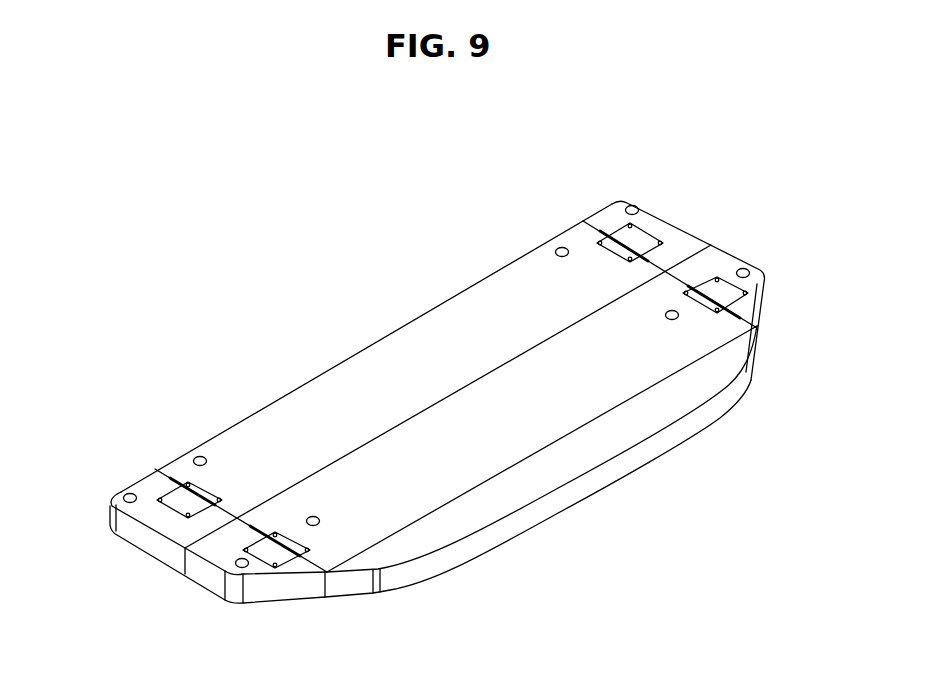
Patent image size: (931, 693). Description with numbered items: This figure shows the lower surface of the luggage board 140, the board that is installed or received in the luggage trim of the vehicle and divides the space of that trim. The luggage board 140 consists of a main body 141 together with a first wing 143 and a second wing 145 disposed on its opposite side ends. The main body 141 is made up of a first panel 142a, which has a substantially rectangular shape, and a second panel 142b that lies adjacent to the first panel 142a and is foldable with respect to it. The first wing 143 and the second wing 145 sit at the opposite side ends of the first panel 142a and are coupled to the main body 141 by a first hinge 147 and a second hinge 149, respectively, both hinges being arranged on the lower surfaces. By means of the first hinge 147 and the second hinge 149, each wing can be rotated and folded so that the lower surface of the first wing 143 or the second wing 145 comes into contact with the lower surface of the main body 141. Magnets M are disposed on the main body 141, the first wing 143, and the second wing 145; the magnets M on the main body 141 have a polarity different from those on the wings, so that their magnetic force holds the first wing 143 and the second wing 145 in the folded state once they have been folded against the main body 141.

The luggage board 140 is at (386, 232).
The main body 141 is at (245, 285).
The first panel 142a is at (272, 435).
The second panel 142b is at (495, 502).
The first wing 143 is at (605, 223).
The second wing 145 is at (147, 488).
The first hinge 147 is at (638, 242).
The second hinge 149 is at (265, 552).
The magnets M is at (124, 494).